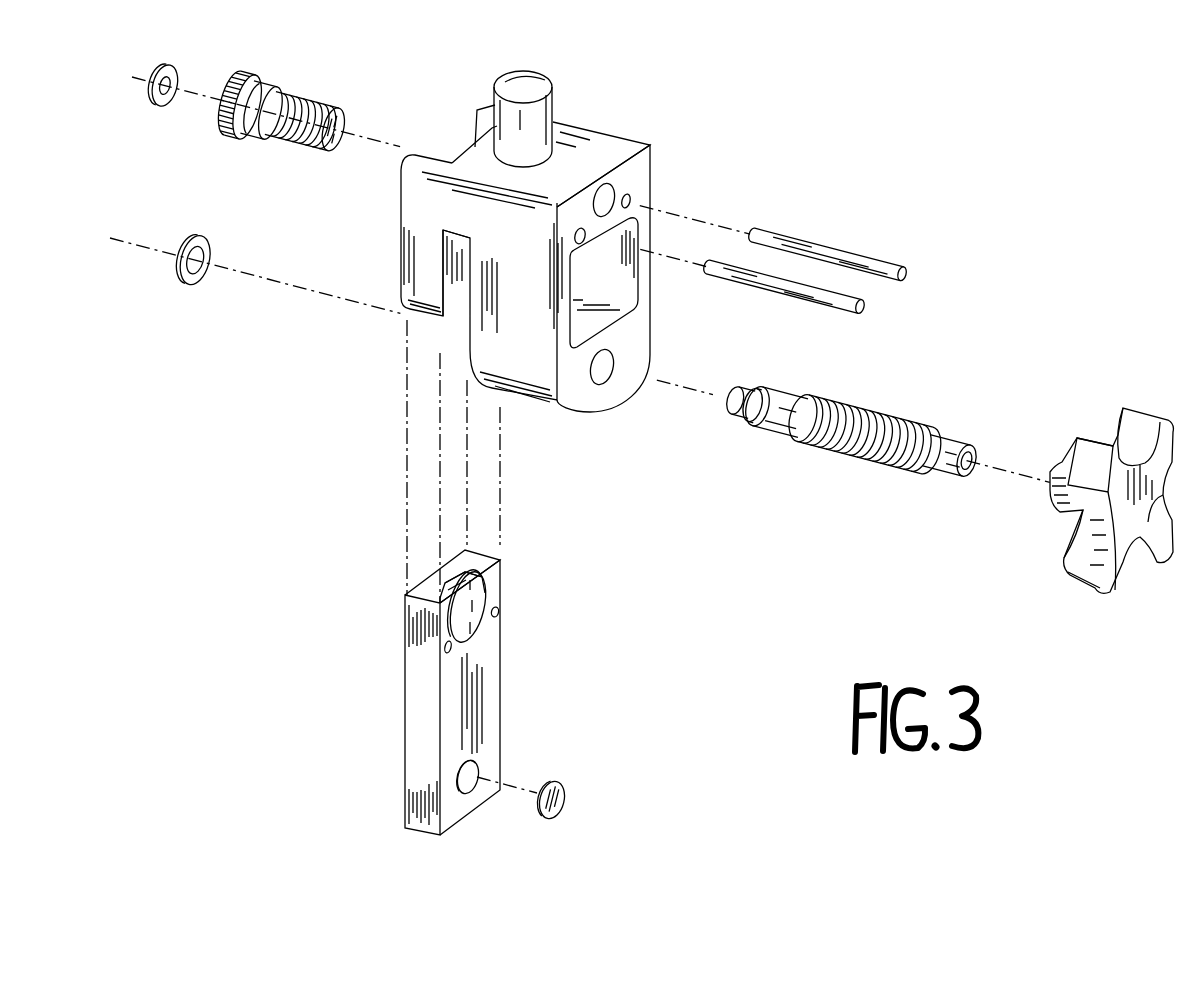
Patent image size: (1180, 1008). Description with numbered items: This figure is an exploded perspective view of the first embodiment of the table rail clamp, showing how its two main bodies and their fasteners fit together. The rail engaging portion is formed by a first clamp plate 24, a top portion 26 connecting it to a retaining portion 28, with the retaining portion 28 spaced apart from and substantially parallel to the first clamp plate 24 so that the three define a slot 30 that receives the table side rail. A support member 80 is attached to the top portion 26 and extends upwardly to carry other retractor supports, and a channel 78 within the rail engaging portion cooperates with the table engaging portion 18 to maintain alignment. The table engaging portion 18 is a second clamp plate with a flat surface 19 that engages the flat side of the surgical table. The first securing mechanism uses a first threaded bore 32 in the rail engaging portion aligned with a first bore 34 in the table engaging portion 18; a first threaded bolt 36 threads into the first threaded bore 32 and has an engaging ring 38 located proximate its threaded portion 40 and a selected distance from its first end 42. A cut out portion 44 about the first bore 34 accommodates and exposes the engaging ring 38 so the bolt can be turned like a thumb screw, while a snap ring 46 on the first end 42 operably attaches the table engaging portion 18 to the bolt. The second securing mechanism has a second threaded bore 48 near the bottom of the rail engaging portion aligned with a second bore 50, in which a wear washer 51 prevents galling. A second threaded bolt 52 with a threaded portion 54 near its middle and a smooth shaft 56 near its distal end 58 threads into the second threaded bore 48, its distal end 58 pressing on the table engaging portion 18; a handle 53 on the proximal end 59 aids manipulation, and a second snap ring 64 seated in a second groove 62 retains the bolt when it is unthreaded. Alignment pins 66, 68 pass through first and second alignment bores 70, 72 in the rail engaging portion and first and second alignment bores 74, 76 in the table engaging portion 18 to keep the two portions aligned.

The table engaging portion 18 is at (442, 584).
The flat surface 19 is at (405, 790).
The first clamp plate 24 is at (420, 255).
The top portion 26 is at (567, 127).
The retaining portion 28 is at (637, 322).
The slot 30 is at (470, 288).
The first threaded bore 32 is at (608, 188).
The first bore 34 is at (465, 572).
The first threaded bolt 36 is at (271, 108).
The engaging ring 38 is at (258, 78).
The threaded portion 40 is at (290, 140).
The first end 42 is at (228, 100).
The cut out portion 44 is at (483, 590).
The snap ring 46 is at (163, 64).
The second threaded bore 48 is at (602, 372).
The second bore 50 is at (476, 792).
The wear washer 51 is at (562, 802).
The second threaded bolt 52 is at (840, 450).
The handle 53 is at (1135, 432).
The threaded portion 54 is at (867, 416).
The smooth shaft 56 is at (778, 430).
The distal end 58 is at (733, 408).
The proximal end 59 is at (966, 447).
The second groove 62 is at (748, 422).
The second snap ring 64 is at (205, 242).
The alignment pin 66 is at (885, 265).
The alignment pin 68 is at (845, 300).
The first alignment bore 70 is at (629, 197).
The second alignment bore 72 is at (582, 230).
The first alignment bore 74 is at (500, 614).
The second alignment bore 76 is at (445, 658).
The channel 78 is at (472, 148).
The support member 80 is at (533, 80).